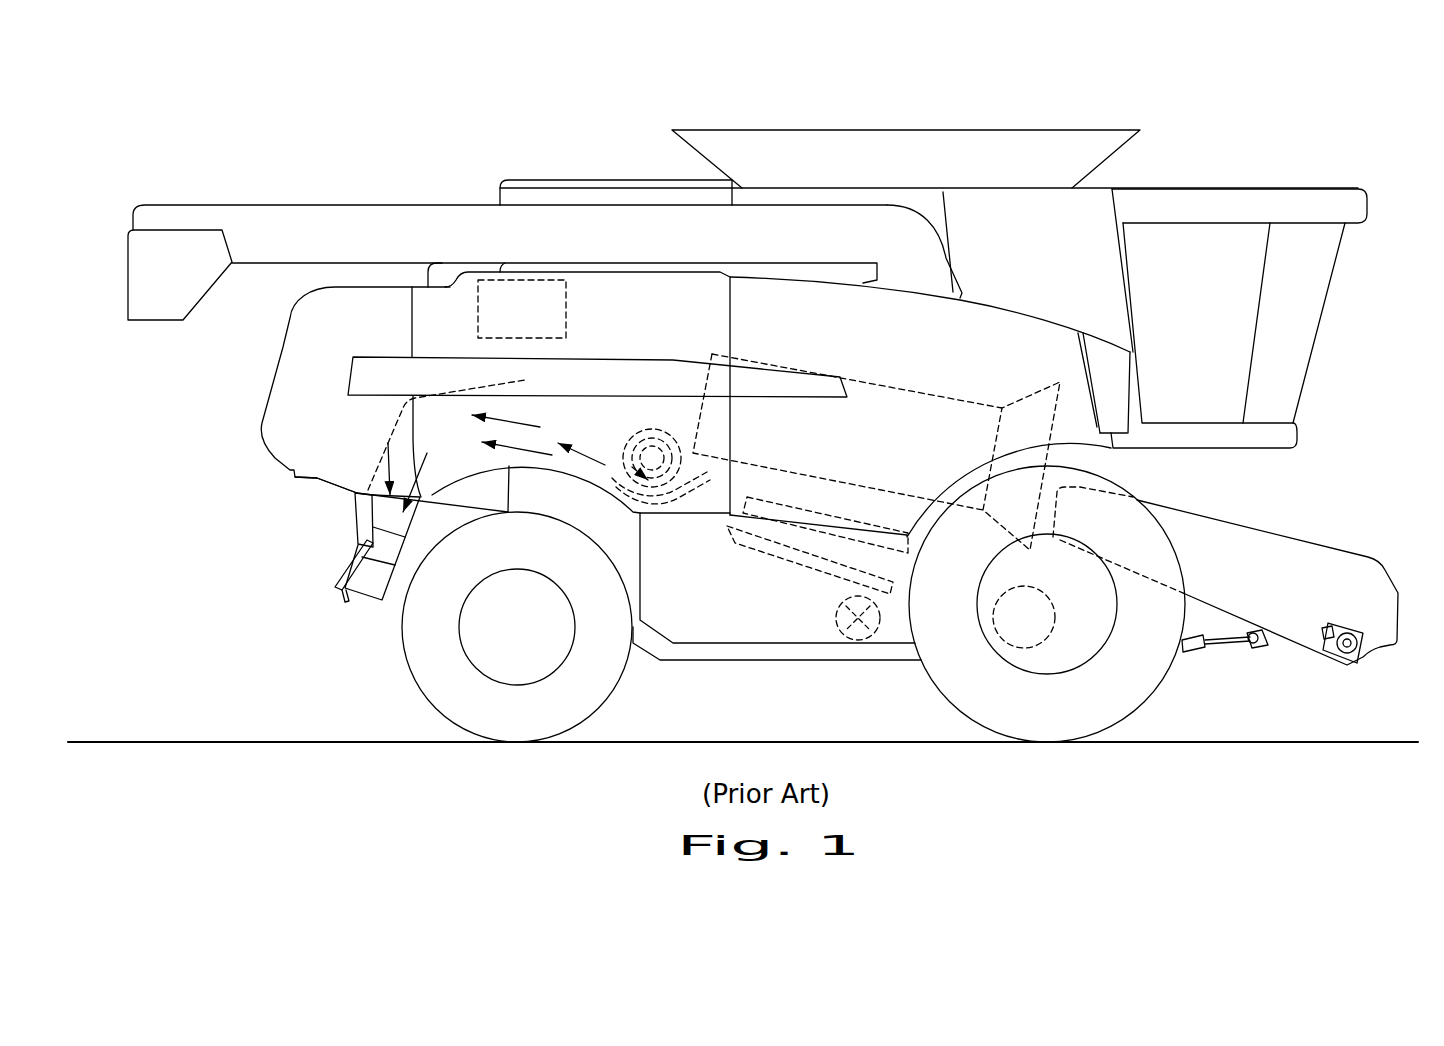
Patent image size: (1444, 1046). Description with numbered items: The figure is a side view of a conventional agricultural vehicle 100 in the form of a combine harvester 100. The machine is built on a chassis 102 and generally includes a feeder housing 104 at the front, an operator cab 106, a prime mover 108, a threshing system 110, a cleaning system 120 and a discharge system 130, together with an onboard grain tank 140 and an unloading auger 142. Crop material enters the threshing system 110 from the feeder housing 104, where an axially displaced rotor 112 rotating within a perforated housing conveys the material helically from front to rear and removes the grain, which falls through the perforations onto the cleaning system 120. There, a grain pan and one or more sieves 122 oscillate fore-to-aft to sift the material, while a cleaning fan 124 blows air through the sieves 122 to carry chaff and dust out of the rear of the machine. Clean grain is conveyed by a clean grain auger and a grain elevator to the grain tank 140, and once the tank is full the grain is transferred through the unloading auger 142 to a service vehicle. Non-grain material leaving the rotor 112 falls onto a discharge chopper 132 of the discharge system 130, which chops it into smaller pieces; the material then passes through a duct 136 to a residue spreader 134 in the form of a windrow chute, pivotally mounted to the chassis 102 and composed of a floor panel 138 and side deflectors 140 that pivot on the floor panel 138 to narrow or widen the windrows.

The agricultural vehicle 100 is at (423, 193).
The chassis 102 is at (705, 660).
The feeder housing 104 is at (1342, 548).
The operator cab 106 is at (1325, 312).
The prime mover 108 is at (517, 280).
The threshing system 110 is at (935, 393).
The rotor 112 is at (887, 385).
The cleaning system 120 is at (762, 550).
The sieve 122 is at (818, 568).
The cleaning fan 124 is at (869, 644).
The discharge system 130 is at (315, 508).
The discharge chopper 132 is at (638, 420).
The residue spreader 134 is at (355, 527).
The duct 136 is at (385, 443).
The floor panel 138 is at (398, 588).
The grain tank 140 is at (1063, 130).
The unloading auger 142 is at (198, 204).